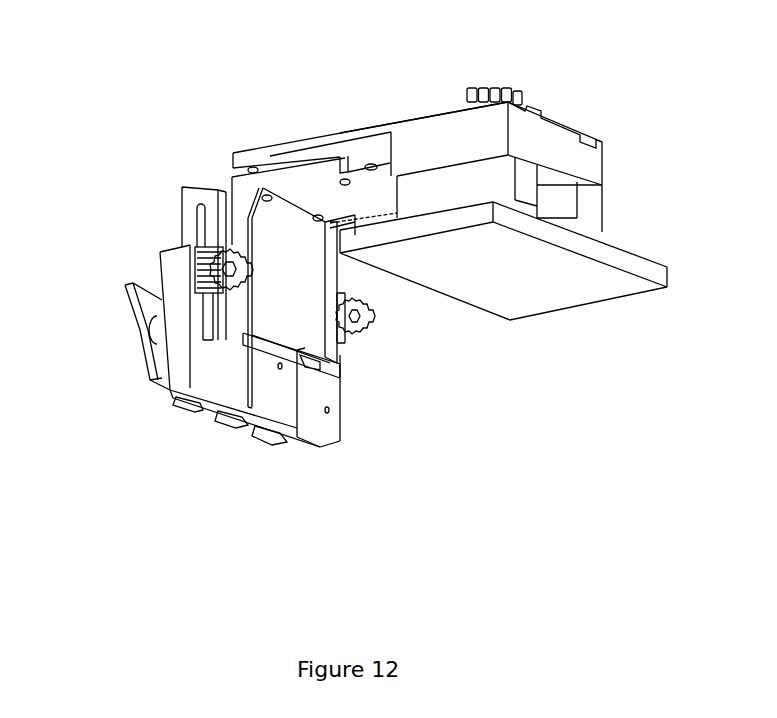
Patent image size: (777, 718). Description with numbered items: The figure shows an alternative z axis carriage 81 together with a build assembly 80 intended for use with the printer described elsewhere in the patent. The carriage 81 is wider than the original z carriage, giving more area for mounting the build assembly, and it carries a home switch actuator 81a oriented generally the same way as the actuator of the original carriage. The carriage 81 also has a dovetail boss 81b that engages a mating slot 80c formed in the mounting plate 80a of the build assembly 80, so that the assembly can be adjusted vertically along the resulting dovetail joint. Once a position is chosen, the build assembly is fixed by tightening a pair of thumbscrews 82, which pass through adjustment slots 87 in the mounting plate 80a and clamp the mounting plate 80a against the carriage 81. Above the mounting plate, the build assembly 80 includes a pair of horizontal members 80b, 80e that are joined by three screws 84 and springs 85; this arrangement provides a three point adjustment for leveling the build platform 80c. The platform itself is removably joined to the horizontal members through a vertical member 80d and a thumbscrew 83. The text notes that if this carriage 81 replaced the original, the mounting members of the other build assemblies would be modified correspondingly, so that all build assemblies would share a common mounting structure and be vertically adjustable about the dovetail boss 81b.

The build assembly 80 is at (127, 178).
The mounting plate 80a is at (262, 233).
The horizontal member 80b is at (290, 175).
The mating slot / build platform 80c is at (528, 295).
The vertical member 80d is at (593, 182).
The horizontal member 80e is at (380, 130).
The z axis carriage 81 is at (259, 462).
The home switch actuator 81a is at (145, 380).
The dovetail boss 81b is at (285, 400).
The thumbscrews 82 is at (202, 268).
The thumbscrew 83 is at (512, 90).
The screws 84 is at (368, 200).
The springs 85 is at (373, 166).
The adjustment slots 87 is at (200, 220).